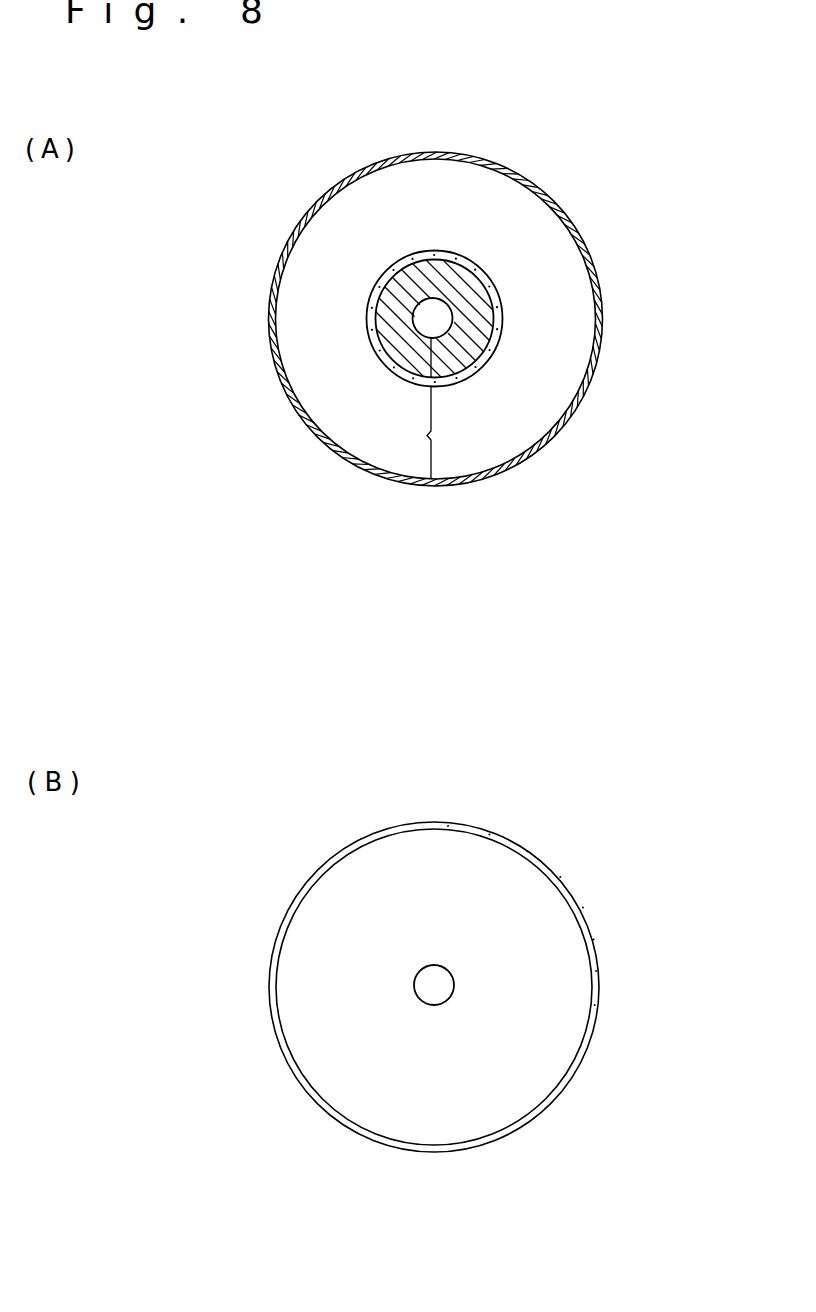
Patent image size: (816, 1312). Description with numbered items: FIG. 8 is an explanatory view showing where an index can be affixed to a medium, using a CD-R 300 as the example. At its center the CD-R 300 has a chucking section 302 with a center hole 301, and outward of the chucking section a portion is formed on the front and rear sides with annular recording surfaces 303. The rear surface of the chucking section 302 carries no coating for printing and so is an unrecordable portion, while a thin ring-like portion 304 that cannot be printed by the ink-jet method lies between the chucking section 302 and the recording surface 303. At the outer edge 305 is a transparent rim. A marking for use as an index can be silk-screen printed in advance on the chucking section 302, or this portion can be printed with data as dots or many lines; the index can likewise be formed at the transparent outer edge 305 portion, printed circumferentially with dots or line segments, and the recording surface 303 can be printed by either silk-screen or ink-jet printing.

The CD-R 300 is at (477, 652).
The center hole 301 is at (424, 304).
The chucking section 302 is at (417, 357).
The annular recording surface 303 is at (416, 441).
The thin ring-like portion 304 is at (500, 343).
The outer edge 305 is at (577, 405).